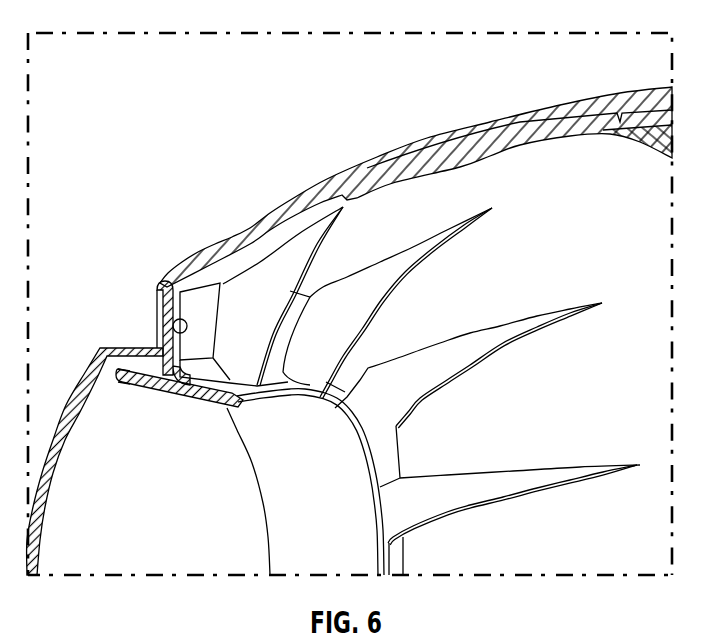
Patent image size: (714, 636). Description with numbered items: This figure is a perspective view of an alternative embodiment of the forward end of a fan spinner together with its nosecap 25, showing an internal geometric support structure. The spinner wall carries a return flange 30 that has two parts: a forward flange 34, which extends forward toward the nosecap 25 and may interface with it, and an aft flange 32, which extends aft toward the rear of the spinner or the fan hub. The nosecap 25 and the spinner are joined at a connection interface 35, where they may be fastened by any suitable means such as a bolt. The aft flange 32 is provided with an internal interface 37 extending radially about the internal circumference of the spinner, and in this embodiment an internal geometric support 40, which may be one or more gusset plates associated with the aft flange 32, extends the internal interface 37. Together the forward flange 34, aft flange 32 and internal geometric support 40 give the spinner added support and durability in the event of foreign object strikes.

The nosecap 25 is at (89, 344).
The return flange 30 is at (168, 387).
The aft flange 32 is at (213, 403).
The forward flange 34 is at (127, 376).
The connection interface 35 is at (167, 323).
The internal interface 37 is at (234, 386).
The internal geometric support 40 is at (240, 332).